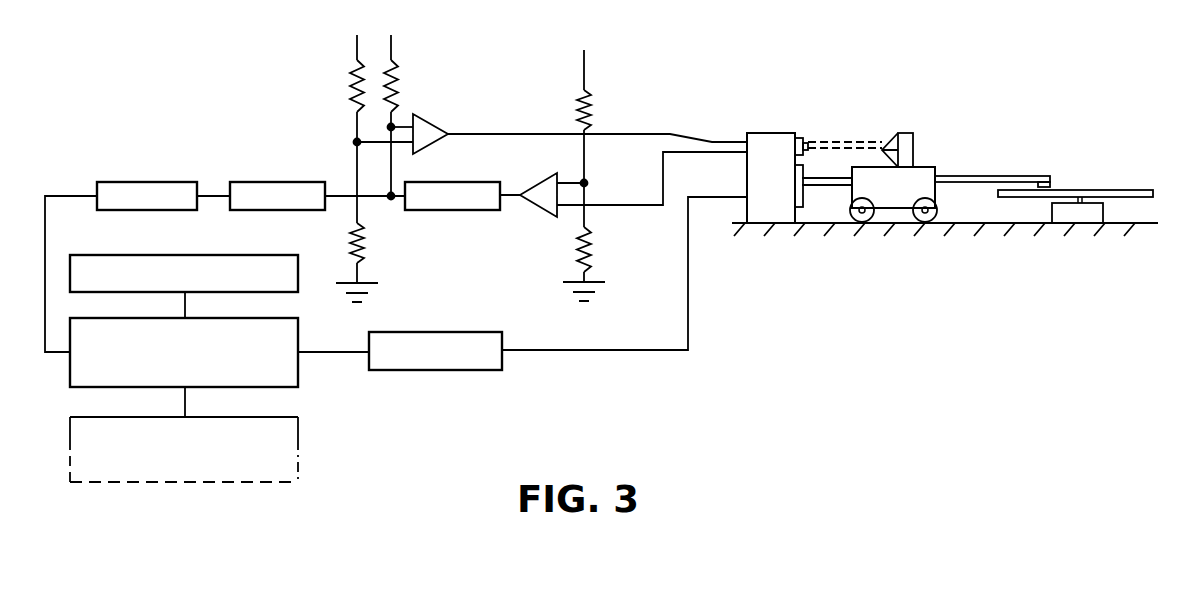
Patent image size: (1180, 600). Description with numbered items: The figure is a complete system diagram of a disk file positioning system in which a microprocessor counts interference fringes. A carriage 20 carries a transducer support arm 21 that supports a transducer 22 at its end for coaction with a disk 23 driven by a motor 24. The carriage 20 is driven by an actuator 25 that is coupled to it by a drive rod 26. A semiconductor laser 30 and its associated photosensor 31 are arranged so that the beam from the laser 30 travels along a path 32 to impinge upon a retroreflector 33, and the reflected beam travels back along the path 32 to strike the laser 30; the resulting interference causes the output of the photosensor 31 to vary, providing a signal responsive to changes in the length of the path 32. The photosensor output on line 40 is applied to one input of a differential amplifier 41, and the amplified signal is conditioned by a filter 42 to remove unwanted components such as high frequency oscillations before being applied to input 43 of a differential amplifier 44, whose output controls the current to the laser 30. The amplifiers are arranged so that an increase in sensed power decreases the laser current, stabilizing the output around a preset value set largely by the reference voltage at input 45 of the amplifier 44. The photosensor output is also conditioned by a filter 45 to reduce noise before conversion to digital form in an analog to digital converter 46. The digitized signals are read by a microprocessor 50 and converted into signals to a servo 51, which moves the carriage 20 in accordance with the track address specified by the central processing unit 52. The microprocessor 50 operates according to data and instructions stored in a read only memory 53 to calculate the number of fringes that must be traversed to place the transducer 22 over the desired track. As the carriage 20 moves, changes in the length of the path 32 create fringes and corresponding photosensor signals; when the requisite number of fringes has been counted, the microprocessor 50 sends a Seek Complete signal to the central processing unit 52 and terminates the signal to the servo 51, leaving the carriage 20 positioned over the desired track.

The carriage 20 is at (926, 167).
The transducer support arm 21 is at (990, 176).
The transducer 22 is at (1050, 184).
The disk 23 is at (1112, 190).
The motor 24 is at (1103, 217).
The actuator 25 is at (799, 209).
The drive rod 26 is at (842, 188).
The semiconductor laser 30 is at (797, 136).
The photosensor 31 is at (793, 150).
The path 32 is at (824, 140).
The retroreflector 33 is at (901, 133).
The line 40 is at (665, 188).
The differential amplifier 41 is at (541, 179).
The filter 42 is at (460, 181).
The input 43 is at (394, 125).
The differential amplifier 44 is at (437, 127).
The filter 45 is at (301, 182).
The analog to digital converter 46 is at (176, 182).
The microprocessor 50 is at (283, 322).
The servo 51 is at (466, 332).
The central processing unit 52 is at (283, 420).
The read only memory 53 is at (283, 257).